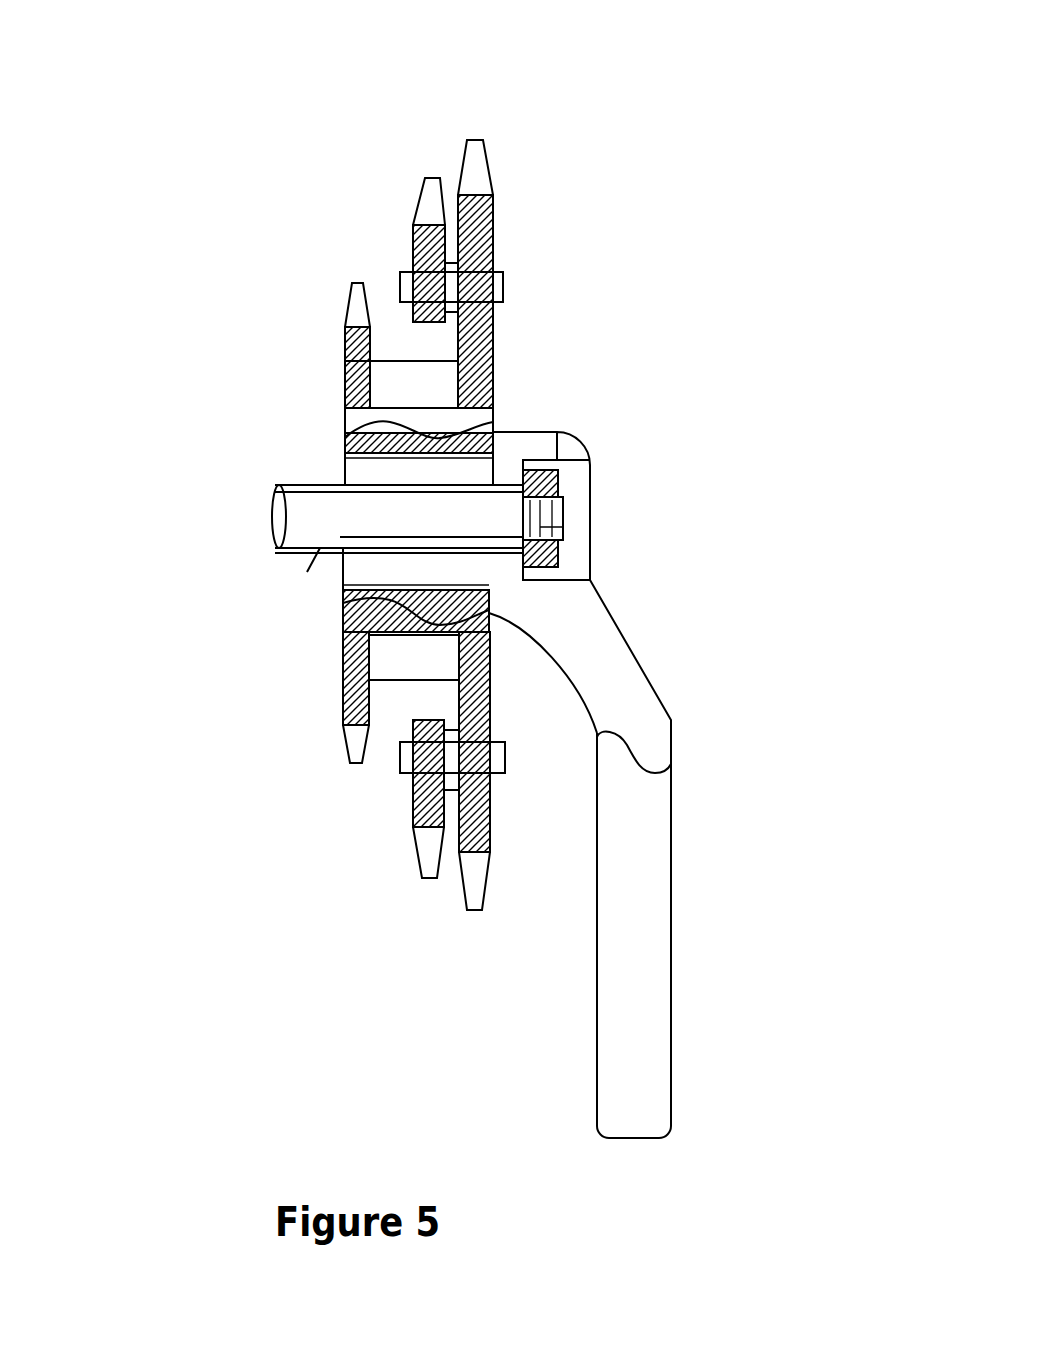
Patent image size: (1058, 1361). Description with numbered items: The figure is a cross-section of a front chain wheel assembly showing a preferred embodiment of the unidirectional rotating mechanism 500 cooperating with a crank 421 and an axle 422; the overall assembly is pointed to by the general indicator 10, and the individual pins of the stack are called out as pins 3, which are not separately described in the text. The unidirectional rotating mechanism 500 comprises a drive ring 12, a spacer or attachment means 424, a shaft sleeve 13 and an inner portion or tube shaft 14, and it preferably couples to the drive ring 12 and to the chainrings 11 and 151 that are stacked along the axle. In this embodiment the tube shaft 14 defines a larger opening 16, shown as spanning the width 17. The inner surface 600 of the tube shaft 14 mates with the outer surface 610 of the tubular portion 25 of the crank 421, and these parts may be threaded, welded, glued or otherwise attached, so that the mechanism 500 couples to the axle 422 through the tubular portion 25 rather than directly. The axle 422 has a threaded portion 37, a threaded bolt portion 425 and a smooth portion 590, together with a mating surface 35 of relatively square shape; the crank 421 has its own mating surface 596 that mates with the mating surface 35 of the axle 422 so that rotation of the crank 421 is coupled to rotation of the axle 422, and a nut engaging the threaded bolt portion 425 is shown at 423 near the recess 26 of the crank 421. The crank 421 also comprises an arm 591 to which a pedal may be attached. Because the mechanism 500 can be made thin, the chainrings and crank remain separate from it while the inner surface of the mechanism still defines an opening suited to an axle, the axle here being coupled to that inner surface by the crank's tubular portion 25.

The connector assembly 10 is at (362, 150).
The chainring 151 is at (432, 205).
The chainring 11 is at (478, 168).
The pin 3 is at (402, 360).
The drive ring 12 is at (345, 361).
The shaft sleeve 13 is at (362, 417).
The tube shaft 14 is at (348, 436).
The opening 16 is at (410, 513).
The mating surface 35 is at (523, 375).
The mating surface 596 is at (590, 459).
The recess 26 is at (590, 470).
The nut portion 423 is at (560, 488).
The threaded bolt portion 425 is at (563, 517).
The width 17 is at (190, 455).
The axle 422 is at (307, 572).
The tubular portion 25 is at (473, 565).
The inner surface 600 is at (488, 592).
The outer surface 610 is at (388, 586).
The crank 421 is at (625, 687).
The spacer/attachment means 424 is at (387, 692).
The unidirectional rotating mechanism 500 is at (292, 766).
The smooth portion 590 is at (355, 923).
The threaded portion 37 is at (478, 918).
The arm 591 is at (642, 1060).